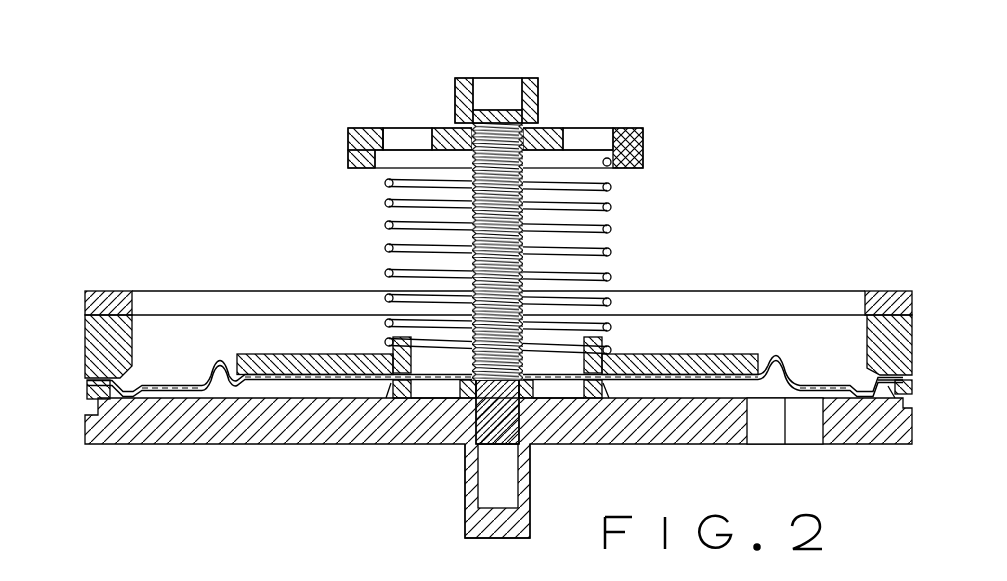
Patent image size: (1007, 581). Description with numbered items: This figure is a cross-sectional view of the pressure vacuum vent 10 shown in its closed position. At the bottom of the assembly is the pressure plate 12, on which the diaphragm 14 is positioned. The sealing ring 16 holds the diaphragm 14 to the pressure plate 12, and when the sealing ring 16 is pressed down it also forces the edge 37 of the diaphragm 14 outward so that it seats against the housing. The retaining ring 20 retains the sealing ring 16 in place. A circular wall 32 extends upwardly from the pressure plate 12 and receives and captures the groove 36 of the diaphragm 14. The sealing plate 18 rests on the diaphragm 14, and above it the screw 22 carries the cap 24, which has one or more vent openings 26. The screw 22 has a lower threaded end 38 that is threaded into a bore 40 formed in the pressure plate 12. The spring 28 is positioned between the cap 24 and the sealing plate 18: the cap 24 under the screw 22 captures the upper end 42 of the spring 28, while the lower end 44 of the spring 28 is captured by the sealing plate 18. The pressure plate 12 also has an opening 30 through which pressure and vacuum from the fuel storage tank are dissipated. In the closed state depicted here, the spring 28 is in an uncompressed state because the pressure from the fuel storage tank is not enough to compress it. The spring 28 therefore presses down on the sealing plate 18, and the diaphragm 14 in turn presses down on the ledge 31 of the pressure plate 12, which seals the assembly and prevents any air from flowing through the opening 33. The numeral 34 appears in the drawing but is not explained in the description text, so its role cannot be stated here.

The pressure vacuum vent 10 is at (488, 50).
The pressure plate 12 is at (855, 444).
The diaphragm 14 is at (297, 378).
The sealing ring 16 is at (914, 318).
The sealing plate 18 is at (703, 362).
The retaining ring 20 is at (878, 292).
The screw 22 is at (510, 78).
The cap 24 is at (629, 128).
The vent opening 26 is at (417, 137).
The spring 28 is at (382, 225).
The opening 30 is at (756, 444).
The ledge 31 is at (603, 393).
The circular wall 32 is at (905, 400).
The opening 33 is at (443, 367).
The diaphragm edge 34 is at (907, 381).
The groove 36 is at (890, 367).
The edge 37 is at (92, 382).
The lower threaded end 38 is at (500, 415).
The bore 40 is at (493, 480).
The upper end 42 is at (615, 157).
The lower end 44 is at (610, 350).